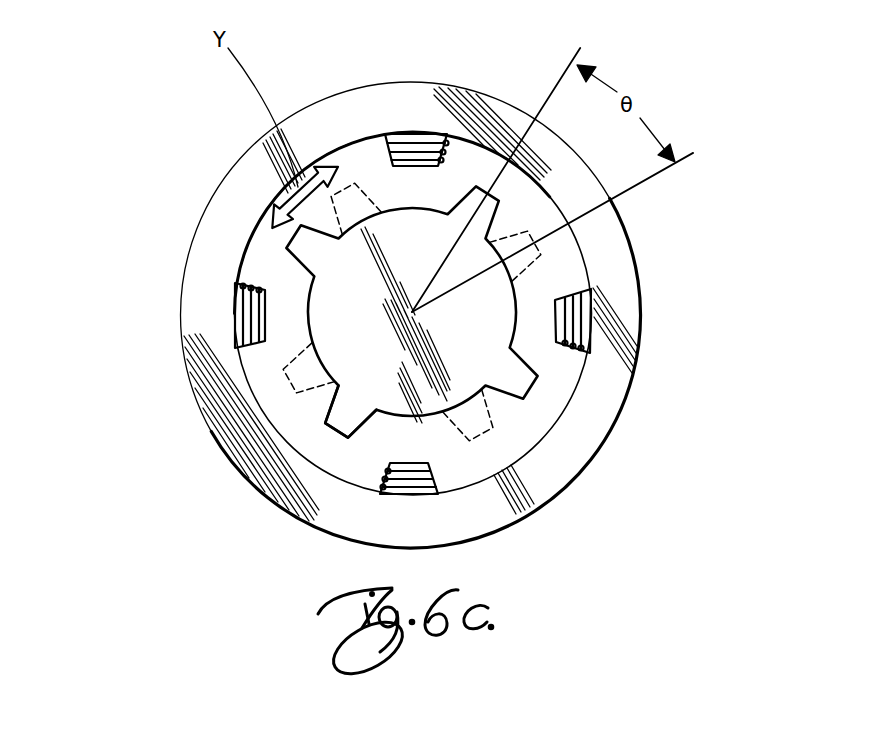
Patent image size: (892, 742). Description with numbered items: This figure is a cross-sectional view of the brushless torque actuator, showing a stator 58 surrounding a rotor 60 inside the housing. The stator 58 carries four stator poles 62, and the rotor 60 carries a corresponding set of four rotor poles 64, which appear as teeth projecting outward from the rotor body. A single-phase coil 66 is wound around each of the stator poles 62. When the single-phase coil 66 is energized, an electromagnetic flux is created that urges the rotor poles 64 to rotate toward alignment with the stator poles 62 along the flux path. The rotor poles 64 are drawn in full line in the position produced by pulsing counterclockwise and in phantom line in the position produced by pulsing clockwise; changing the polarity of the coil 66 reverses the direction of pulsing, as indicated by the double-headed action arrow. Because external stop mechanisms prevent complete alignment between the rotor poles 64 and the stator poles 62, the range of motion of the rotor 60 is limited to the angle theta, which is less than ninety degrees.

The stator 58 is at (218, 217).
The rotor 60 is at (470, 367).
The stator poles 62 is at (414, 163).
The rotor poles 64 is at (340, 424).
The single-phase coil 66 is at (245, 313).